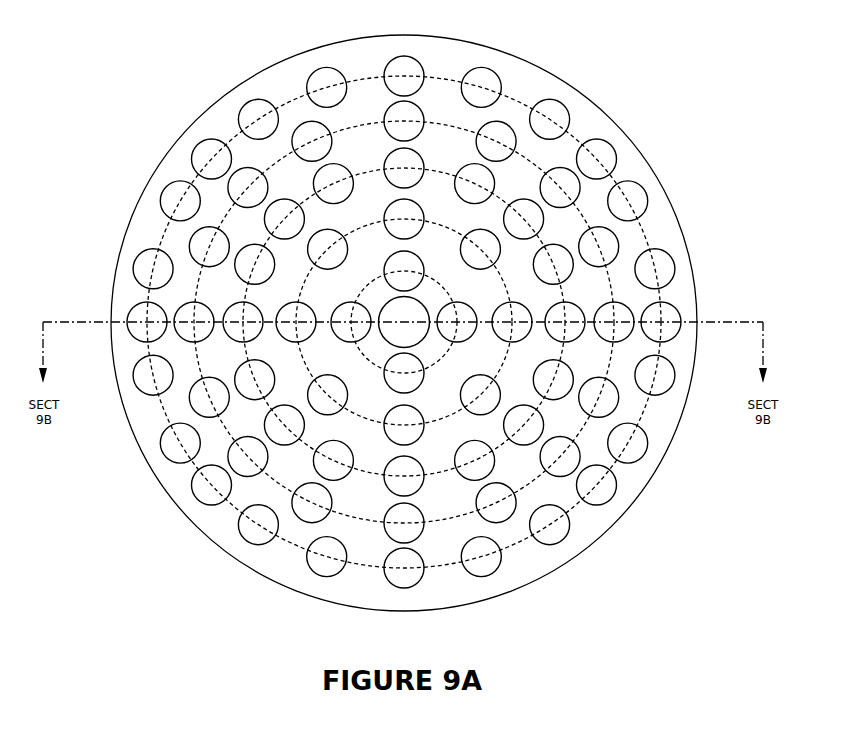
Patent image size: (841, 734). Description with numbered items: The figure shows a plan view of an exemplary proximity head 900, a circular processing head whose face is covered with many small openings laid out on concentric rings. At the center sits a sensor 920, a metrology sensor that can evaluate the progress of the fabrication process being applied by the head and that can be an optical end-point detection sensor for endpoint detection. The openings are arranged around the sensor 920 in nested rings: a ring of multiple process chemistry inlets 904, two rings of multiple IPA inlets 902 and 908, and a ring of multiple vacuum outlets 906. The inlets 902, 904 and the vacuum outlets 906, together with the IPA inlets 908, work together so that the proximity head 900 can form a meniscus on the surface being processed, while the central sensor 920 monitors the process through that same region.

The proximity head 900 is at (213, 42).
The IPA inlets 902 is at (443, 60).
The process chemistry inlets 904 is at (420, 163).
The vacuum outlets 906 is at (443, 106).
The IPA inlets 908 is at (437, 256).
The sensor 920 is at (382, 305).